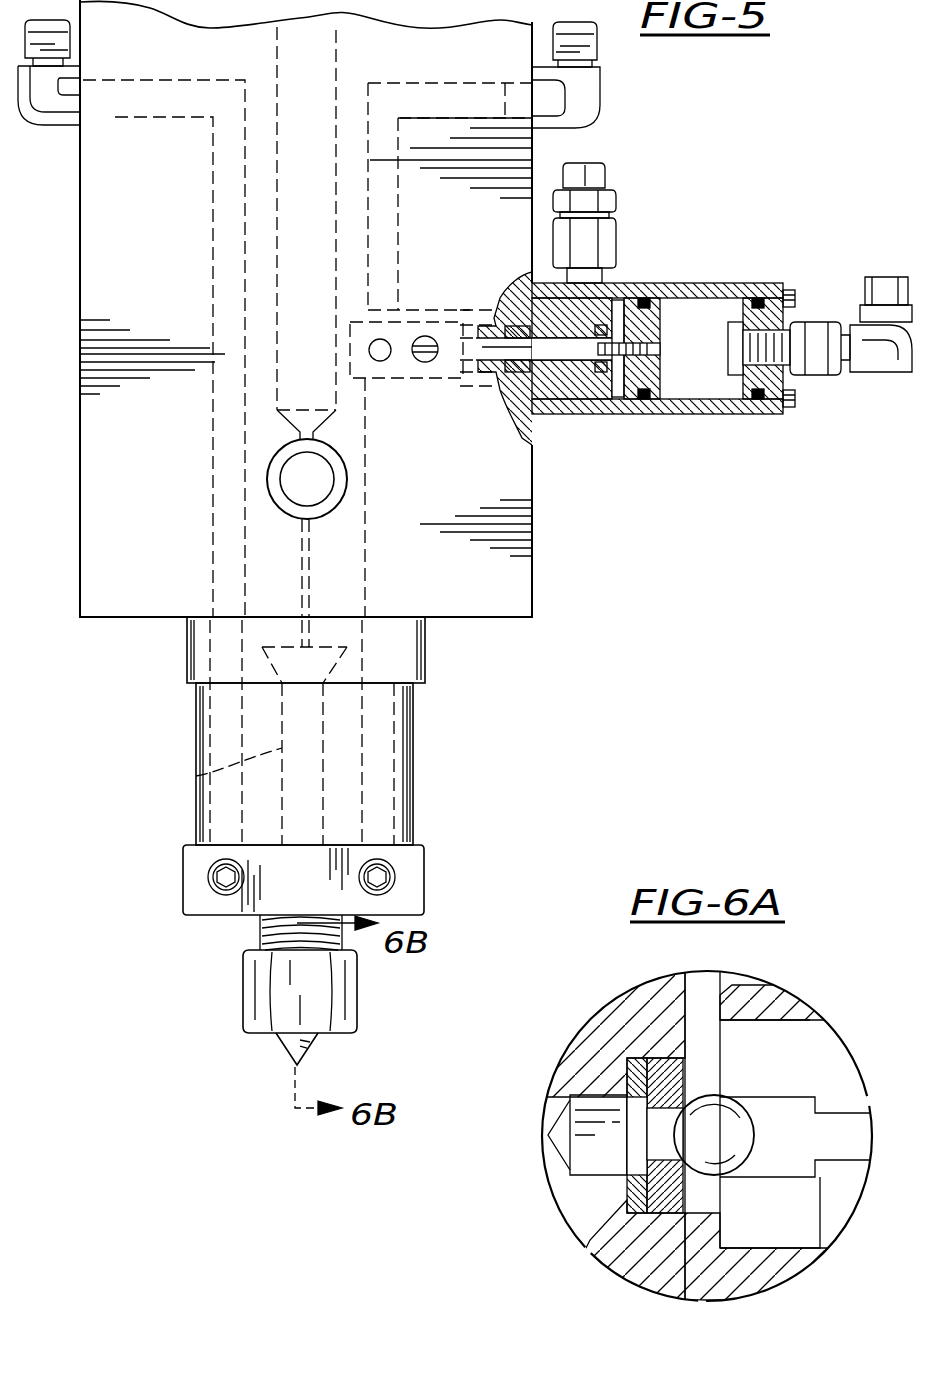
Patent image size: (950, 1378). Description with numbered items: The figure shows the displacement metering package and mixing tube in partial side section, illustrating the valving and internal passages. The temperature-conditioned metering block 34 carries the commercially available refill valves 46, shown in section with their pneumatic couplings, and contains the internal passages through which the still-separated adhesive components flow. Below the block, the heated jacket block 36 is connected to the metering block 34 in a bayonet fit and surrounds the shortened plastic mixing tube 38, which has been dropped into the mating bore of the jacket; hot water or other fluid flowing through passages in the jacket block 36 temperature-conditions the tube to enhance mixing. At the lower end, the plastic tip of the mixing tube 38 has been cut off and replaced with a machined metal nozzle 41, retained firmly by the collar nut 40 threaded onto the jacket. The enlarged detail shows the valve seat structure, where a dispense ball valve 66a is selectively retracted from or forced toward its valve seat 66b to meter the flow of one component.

In FIG. 5, the metering block 34 is at (532, 470).
In FIG. 5, the heated jacket block 36 is at (413, 768).
In FIG. 5, the mixing tube 38 is at (196, 776).
In FIG. 5, the collar nut 40 is at (255, 997).
In FIG. 5, the machined metal nozzle 41 is at (318, 1038).
In FIG. 5, the refill valves 46 is at (680, 283).
In FIG. 6A, the dispense ball valve 66a is at (738, 1132).
In FIG. 6A, the valve seat 66b is at (690, 1075).